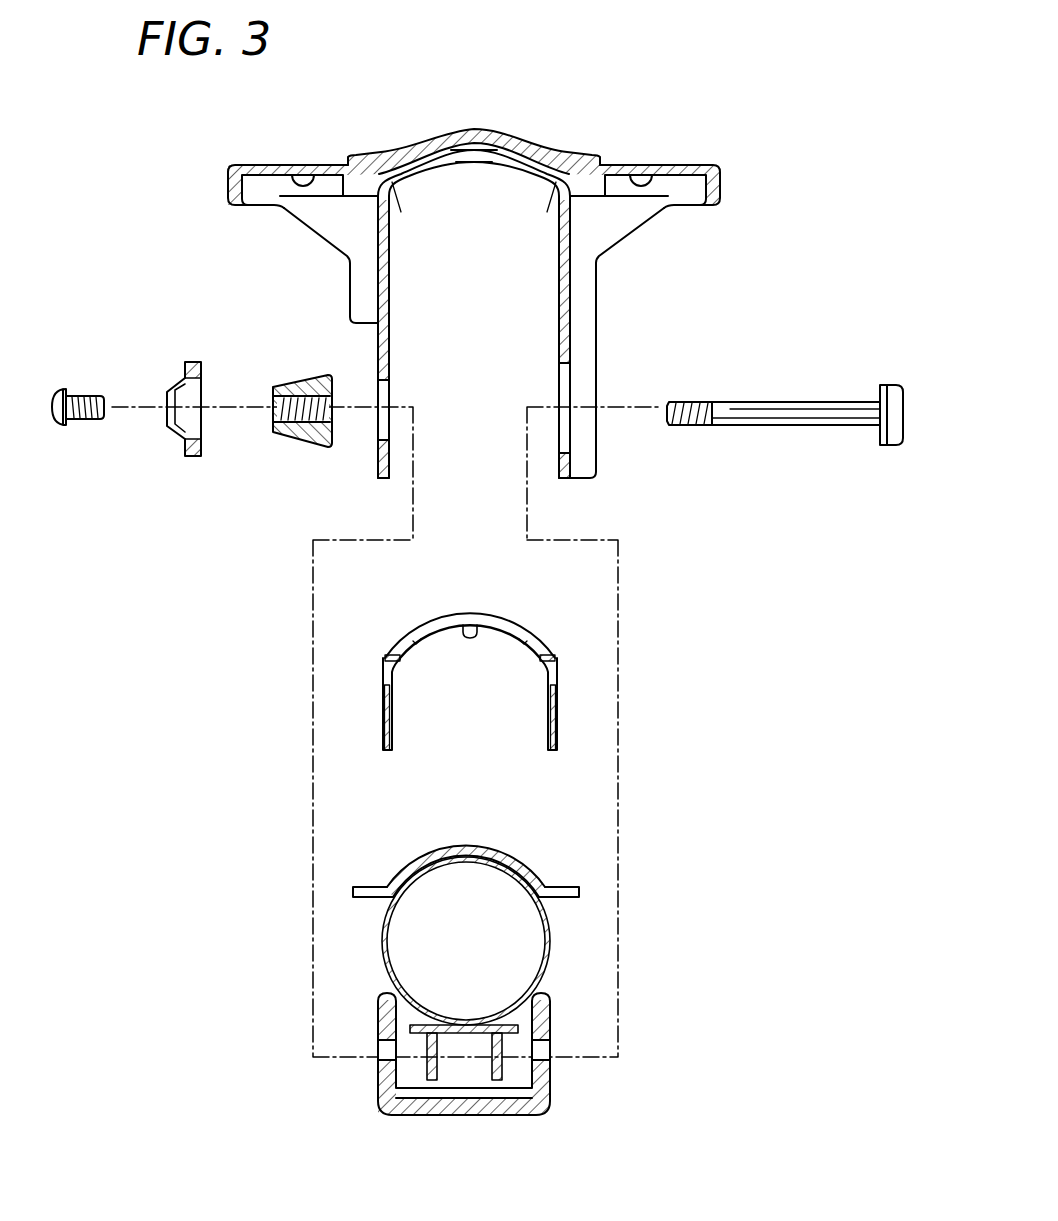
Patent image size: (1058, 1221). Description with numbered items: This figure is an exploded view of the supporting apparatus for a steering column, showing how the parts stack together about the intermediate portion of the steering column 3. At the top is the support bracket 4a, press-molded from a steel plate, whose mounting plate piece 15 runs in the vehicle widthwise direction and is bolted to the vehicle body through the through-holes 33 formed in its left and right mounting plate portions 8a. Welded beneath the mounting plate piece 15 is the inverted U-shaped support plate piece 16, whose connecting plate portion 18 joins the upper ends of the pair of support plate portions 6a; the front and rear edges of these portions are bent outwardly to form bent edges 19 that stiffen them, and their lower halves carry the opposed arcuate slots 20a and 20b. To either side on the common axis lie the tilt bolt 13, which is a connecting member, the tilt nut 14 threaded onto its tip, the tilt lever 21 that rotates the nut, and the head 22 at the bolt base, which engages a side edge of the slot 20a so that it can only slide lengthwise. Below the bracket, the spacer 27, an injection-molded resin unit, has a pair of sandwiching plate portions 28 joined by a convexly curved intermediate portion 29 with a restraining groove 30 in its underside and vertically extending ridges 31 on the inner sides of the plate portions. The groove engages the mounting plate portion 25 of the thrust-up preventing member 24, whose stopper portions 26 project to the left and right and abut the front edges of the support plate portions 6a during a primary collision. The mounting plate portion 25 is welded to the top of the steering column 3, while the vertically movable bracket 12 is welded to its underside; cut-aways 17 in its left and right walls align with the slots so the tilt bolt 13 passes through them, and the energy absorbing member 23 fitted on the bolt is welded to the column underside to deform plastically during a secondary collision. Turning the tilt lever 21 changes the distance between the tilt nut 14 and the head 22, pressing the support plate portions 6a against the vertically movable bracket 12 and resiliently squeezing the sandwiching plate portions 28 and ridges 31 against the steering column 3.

The steering column 3 is at (548, 944).
The support bracket 4a is at (481, 108).
The support plate portions 6a is at (384, 302).
The mounting plate portions 8a is at (252, 168).
The vertically movable bracket 12 is at (458, 1085).
The tilt bolt 13 is at (785, 422).
The tilt nut 14 is at (292, 447).
The mounting plate piece 15 is at (422, 138).
The support plate piece 16 is at (483, 288).
The cut-aways 17 is at (380, 1064).
The connecting plate portion 18 is at (526, 160).
The bent edges 19 is at (364, 265).
The slot 20a is at (567, 455).
The slot 20b is at (376, 440).
The tilt lever 21 is at (194, 458).
The head 22 is at (890, 384).
The energy absorbing member 23 is at (522, 1016).
The thrust-up preventing member 24 is at (454, 844).
The mounting plate portion 25 is at (437, 856).
The stopper portions 26 is at (370, 886).
The spacer 27 is at (463, 670).
The sandwiching plate portions 28 is at (380, 728).
The intermediate portion 29 is at (438, 616).
The restraining groove 30 is at (472, 630).
The ridges 31 is at (392, 716).
The through-holes 33 is at (272, 186).